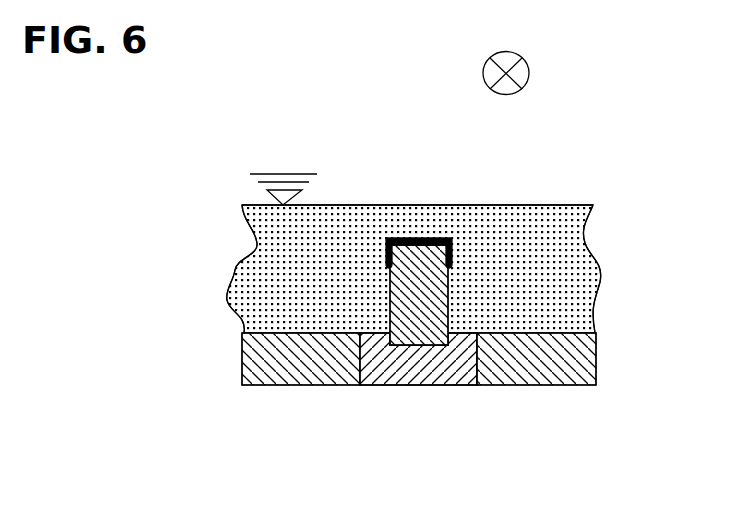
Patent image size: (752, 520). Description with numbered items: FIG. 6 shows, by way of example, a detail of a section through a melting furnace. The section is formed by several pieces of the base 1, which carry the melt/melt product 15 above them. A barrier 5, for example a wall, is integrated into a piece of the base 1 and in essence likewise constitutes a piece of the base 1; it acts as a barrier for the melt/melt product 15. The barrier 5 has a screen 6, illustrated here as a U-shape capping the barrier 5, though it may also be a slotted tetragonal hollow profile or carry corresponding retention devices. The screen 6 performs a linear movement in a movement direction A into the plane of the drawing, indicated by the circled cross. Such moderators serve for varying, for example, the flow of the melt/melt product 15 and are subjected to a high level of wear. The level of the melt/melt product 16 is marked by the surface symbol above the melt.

The piece of the base 1 is at (278, 370).
The barrier 5 is at (433, 305).
The screen 6 is at (431, 240).
The melt/melt product 15 is at (580, 243).
The melt/melt product 16 is at (373, 207).
The movement direction A is at (524, 73).